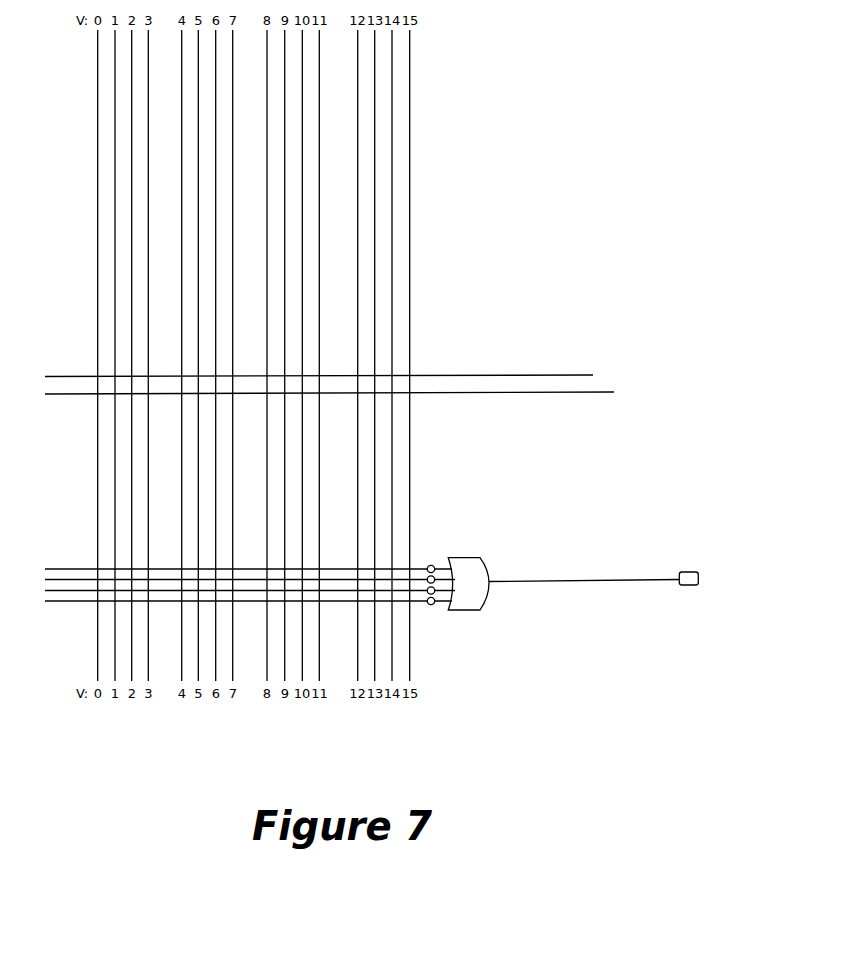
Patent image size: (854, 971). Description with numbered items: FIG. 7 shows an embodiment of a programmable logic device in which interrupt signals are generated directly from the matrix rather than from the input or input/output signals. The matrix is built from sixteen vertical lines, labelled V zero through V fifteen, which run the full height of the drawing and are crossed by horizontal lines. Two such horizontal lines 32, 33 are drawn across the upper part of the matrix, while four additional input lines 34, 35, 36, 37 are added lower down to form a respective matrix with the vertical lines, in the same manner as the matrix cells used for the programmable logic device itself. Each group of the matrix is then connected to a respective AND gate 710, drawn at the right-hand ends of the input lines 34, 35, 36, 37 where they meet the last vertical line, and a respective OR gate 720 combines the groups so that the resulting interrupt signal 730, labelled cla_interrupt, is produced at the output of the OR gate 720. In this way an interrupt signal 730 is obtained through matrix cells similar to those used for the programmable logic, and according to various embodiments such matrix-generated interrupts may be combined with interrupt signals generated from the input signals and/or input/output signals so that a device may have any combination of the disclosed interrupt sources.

The bus line 32 is at (309, 376).
The bus line 33 is at (320, 394).
The input line 34 is at (225, 569).
The input line 35 is at (225, 579).
The input line 36 is at (225, 590).
The input line 37 is at (225, 601).
The AND gate 710 is at (441, 561).
The OR gate 720 is at (478, 562).
The interrupt output signal 730 is at (683, 572).